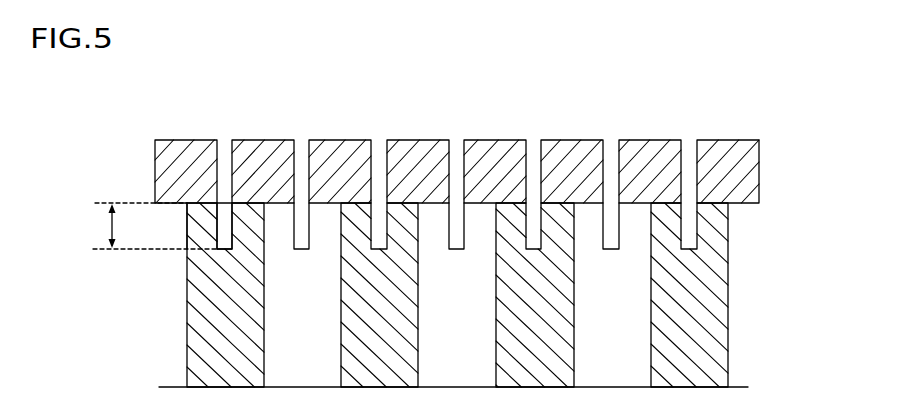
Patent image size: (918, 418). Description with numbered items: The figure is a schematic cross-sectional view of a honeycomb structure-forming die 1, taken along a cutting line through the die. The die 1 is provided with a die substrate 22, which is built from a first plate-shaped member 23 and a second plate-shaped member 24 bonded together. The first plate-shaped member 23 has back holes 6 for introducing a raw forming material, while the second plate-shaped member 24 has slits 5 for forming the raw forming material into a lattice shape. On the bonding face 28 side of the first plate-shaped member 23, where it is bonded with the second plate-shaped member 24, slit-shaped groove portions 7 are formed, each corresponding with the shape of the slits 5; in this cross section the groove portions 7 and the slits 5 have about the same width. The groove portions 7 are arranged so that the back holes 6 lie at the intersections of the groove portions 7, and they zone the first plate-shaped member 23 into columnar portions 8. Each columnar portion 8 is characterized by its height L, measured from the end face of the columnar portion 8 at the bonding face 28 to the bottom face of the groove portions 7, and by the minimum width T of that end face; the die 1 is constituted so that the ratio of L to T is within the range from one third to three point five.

The honeycomb structure-forming die 1 is at (656, 108).
The slits 5 is at (612, 148).
The back holes 6 is at (627, 331).
The groove portions 7 is at (216, 242).
The columnar portions 8 is at (198, 223).
The die substrate 22 is at (799, 170).
The first plate-shaped member 23 is at (697, 265).
The second plate-shaped member 24 is at (722, 180).
The bonding face 28 is at (200, 200).